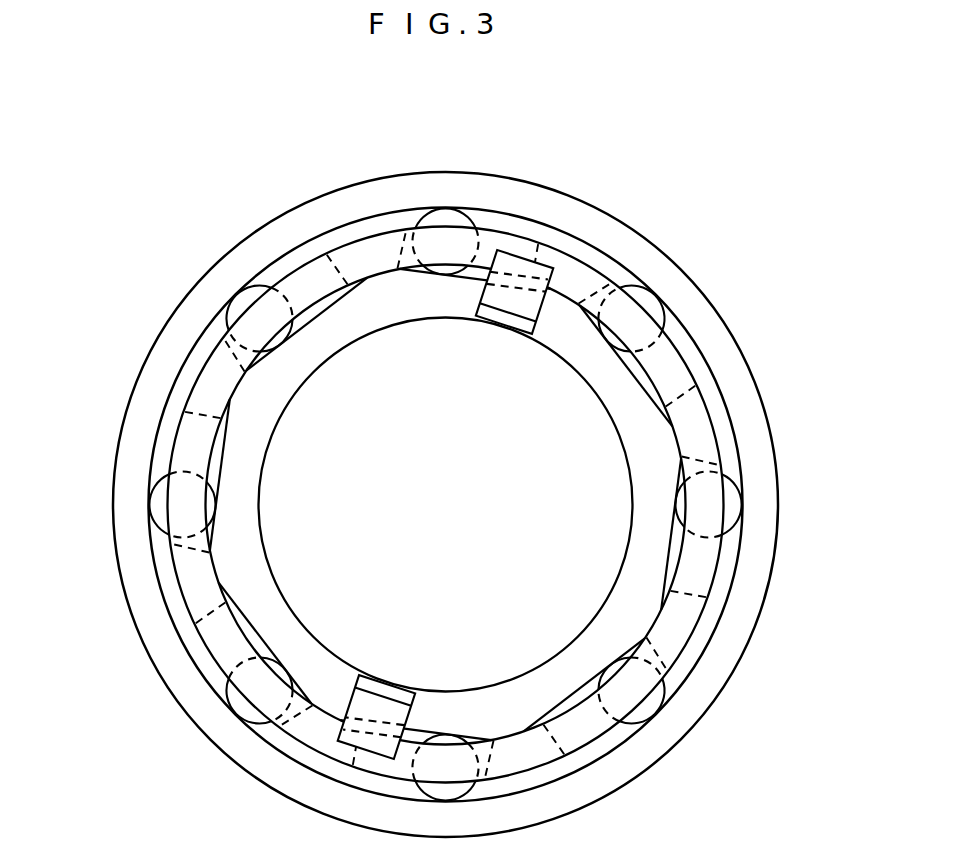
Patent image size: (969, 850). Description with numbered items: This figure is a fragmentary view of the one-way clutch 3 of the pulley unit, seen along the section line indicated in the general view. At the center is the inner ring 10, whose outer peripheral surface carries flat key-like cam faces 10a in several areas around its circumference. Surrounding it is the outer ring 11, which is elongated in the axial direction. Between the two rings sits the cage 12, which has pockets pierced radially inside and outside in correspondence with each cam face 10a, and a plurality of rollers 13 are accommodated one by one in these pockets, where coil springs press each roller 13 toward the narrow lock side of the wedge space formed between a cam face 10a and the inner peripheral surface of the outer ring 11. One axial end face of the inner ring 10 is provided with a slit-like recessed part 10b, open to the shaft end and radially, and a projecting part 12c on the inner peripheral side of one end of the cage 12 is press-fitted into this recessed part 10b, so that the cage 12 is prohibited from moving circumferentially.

The one-way clutch 3 is at (690, 247).
The inner ring 10 is at (608, 394).
The cam face 10a is at (219, 454).
The recessed part 10b is at (527, 336).
The outer ring 11 is at (601, 231).
The cage 12 is at (522, 229).
The projecting part 12c is at (502, 299).
The roller 13 is at (440, 211).